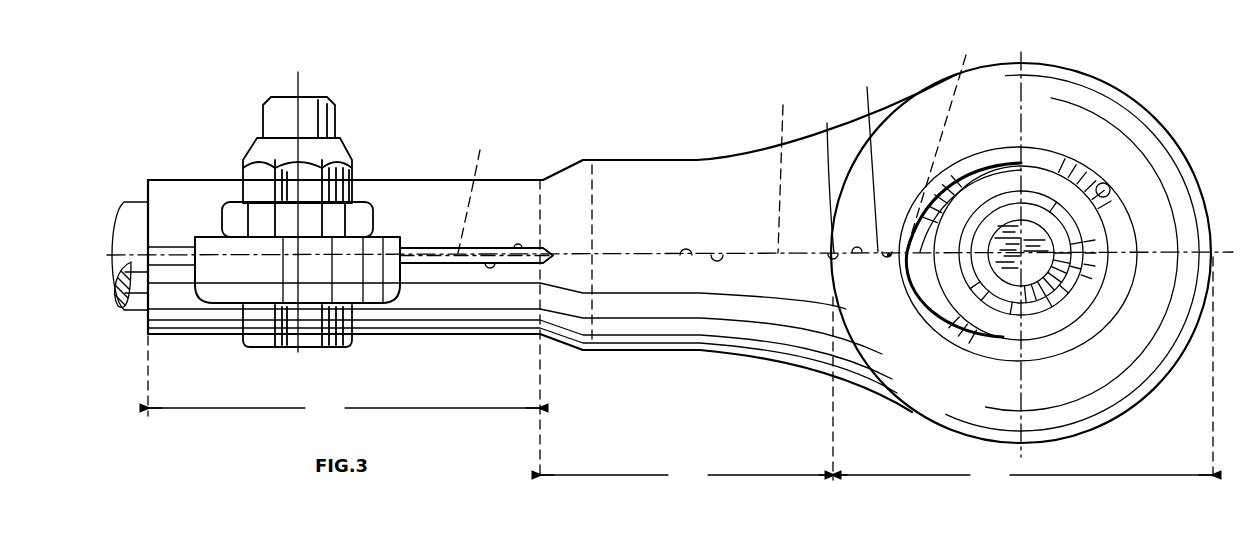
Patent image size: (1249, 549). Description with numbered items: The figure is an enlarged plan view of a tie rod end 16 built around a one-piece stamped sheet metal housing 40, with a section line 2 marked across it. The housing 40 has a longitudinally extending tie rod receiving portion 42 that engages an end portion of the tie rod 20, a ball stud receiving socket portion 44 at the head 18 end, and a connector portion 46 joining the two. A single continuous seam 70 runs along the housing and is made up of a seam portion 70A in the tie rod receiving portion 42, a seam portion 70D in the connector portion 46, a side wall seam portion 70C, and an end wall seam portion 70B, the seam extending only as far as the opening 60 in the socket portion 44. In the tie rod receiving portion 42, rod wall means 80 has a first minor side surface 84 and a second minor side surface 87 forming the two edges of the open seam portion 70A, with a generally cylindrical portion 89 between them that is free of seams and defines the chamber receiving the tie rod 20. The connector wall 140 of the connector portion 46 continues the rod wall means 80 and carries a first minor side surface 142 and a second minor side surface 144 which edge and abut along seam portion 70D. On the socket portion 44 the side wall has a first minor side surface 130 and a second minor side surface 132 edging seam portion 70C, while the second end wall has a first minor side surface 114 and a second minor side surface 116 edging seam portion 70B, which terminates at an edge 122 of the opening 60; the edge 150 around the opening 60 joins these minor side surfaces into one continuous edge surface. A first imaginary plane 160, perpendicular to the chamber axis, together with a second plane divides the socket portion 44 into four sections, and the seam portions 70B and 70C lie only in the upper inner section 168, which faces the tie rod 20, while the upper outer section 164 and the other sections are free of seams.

The section line 2- 2 is at (120, 257).
The tie rod end 16 is at (618, 380).
The head 18 is at (950, 432).
The tie rod 20 is at (133, 213).
The sheet metal housing 40 is at (576, 128).
The tie rod receiving portion 42 is at (421, 130).
The socket portion 44 is at (1023, 475).
The connector portion 46 is at (686, 475).
The opening 60 is at (1088, 185).
The seam 70 is at (642, 245).
The seam portion 70A is at (479, 189).
The end wall seam portion 70B is at (948, 141).
The side wall seam portion 70C is at (872, 158).
The seam portion 70D is at (796, 168).
The rod wall means 80 is at (393, 172).
The first minor side surface 84 is at (518, 247).
The second minor side surface 87 is at (490, 264).
The generally cylindrical portion 89 is at (438, 296).
The first minor side surface 114 is at (887, 252).
The second minor side surface 116 is at (886, 300).
The edge 122 is at (917, 220).
The first minor side surface 130 is at (826, 180).
The second minor side surface 132 is at (850, 318).
The connector wall 140 is at (688, 178).
The first minor side surface 142 is at (726, 252).
The second minor side surface 144 is at (680, 257).
The edge 150 is at (1107, 186).
The first plane 160 is at (1024, 50).
The upper outer section 164 is at (1163, 290).
The upper inner section 168 is at (1050, 102).